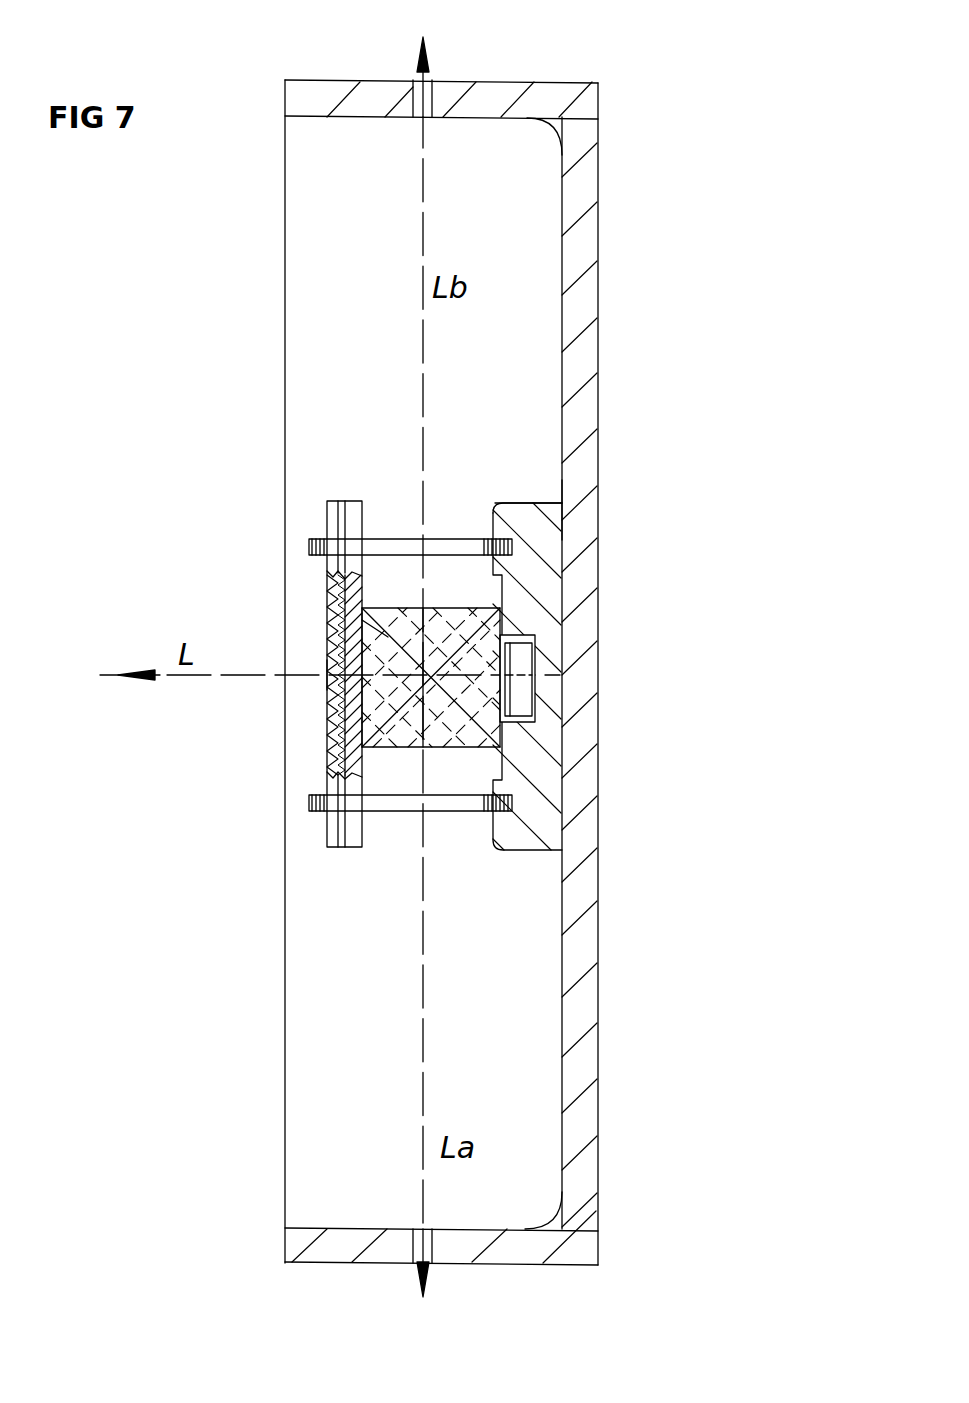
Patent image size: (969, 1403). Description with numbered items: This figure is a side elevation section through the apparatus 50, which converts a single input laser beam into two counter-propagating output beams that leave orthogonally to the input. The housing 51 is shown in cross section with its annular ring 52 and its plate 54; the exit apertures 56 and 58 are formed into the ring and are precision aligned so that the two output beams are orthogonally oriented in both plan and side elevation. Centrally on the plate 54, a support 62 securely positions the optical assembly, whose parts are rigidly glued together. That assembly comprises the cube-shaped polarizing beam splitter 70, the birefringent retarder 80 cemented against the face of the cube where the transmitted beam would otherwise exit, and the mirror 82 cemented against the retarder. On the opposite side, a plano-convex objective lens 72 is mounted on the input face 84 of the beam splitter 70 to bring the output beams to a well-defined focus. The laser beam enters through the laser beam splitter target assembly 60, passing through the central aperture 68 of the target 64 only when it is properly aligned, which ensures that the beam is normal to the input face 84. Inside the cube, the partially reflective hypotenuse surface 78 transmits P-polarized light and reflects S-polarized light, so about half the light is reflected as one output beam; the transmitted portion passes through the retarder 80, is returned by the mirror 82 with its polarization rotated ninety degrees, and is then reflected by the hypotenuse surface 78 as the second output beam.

The apparatus 50 is at (622, 275).
The housing 51 is at (600, 510).
The annular ring 52 is at (493, 82).
The plate 54 is at (598, 405).
The exit aperture 56 is at (430, 107).
The exit aperture 58 is at (432, 1248).
The laser beam splitter target assembly 60 is at (327, 835).
The support 62 is at (518, 850).
The target 64 is at (338, 745).
The central aperture 68 is at (330, 678).
The polarizing beam splitter 70 is at (457, 608).
The plano-convex objective lens 72 is at (345, 618).
The partially reflective hypotenuse surface 78 is at (388, 637).
The birefringent retarder 80 is at (515, 722).
The mirror 82 is at (525, 655).
The input face 84 is at (330, 768).